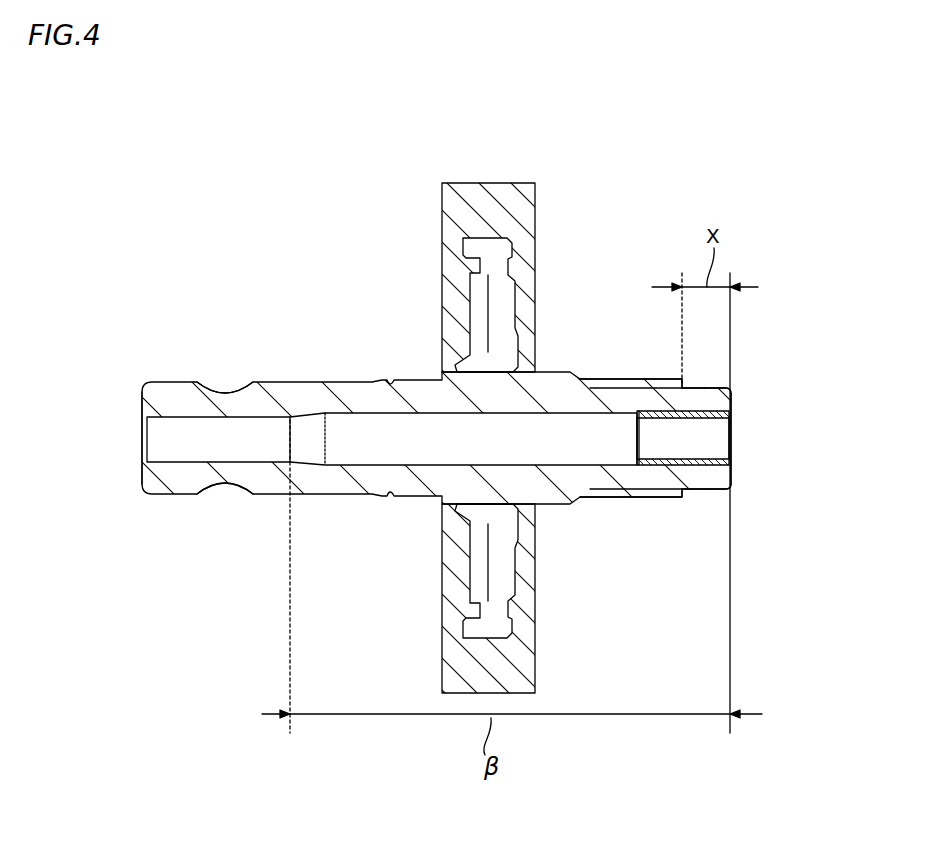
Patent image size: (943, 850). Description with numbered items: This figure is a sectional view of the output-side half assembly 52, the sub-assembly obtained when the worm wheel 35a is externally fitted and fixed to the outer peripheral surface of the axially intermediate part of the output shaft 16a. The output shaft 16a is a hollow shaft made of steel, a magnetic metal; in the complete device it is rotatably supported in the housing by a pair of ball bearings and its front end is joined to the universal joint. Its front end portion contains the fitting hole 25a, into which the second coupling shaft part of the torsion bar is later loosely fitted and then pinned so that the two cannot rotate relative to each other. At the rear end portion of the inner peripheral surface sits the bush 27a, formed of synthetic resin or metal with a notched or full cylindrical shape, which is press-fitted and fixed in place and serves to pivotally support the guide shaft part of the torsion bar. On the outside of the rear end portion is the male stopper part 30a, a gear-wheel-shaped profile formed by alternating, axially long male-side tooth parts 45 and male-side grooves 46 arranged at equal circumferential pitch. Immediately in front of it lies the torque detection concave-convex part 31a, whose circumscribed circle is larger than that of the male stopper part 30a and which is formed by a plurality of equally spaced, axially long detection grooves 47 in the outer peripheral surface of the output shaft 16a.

The output-side half assembly 52 is at (196, 370).
The output shaft 16a is at (268, 402).
The fitting hole 25a is at (218, 452).
The worm wheel 35a is at (485, 194).
The bush 27a is at (677, 468).
The torque detection concave-convex part 31a is at (632, 384).
The detection groove 47 is at (613, 383).
The male-side groove 46 is at (703, 386).
The male-side tooth part 45 is at (727, 382).
The male stopper part 30a is at (732, 490).